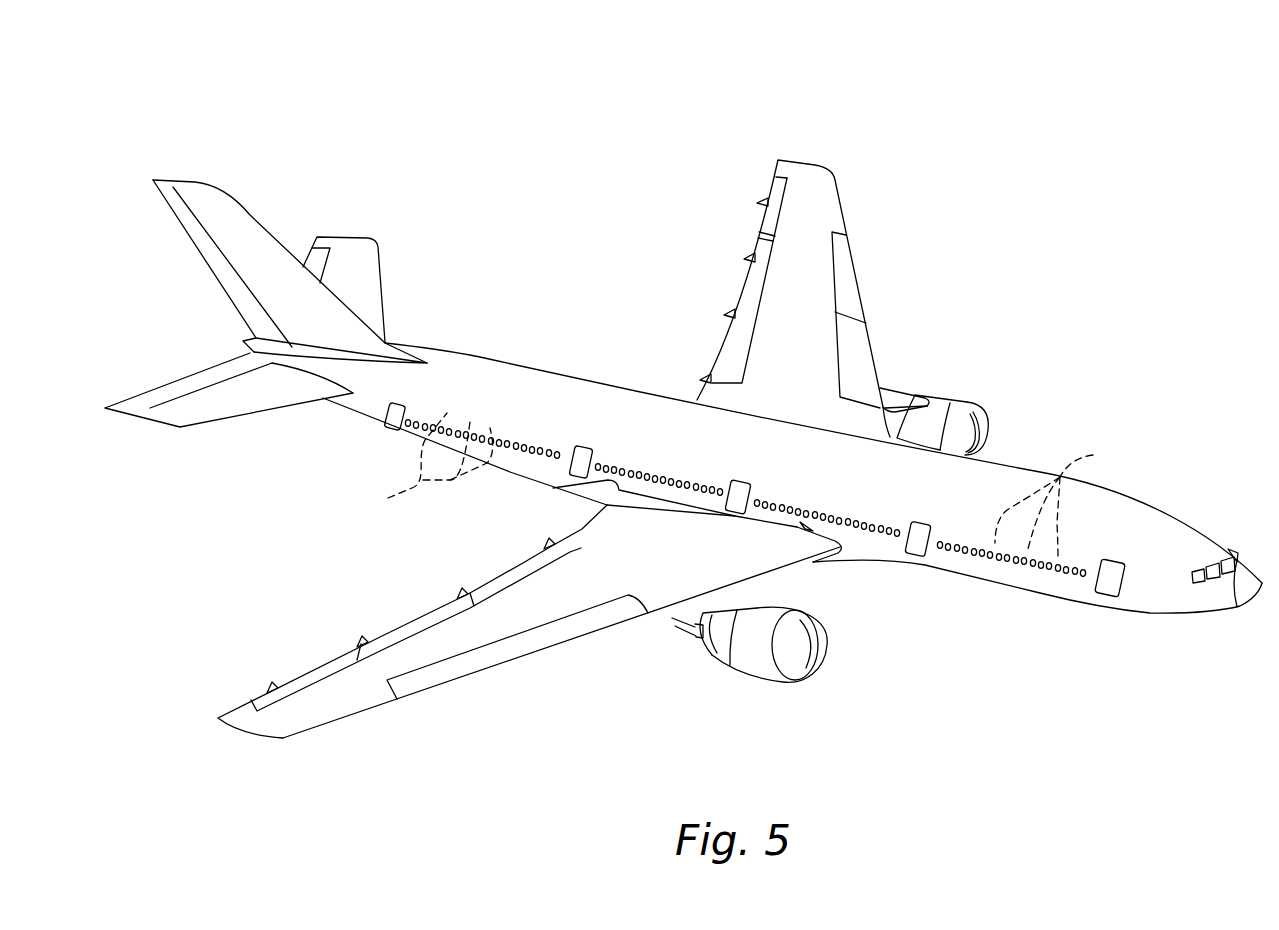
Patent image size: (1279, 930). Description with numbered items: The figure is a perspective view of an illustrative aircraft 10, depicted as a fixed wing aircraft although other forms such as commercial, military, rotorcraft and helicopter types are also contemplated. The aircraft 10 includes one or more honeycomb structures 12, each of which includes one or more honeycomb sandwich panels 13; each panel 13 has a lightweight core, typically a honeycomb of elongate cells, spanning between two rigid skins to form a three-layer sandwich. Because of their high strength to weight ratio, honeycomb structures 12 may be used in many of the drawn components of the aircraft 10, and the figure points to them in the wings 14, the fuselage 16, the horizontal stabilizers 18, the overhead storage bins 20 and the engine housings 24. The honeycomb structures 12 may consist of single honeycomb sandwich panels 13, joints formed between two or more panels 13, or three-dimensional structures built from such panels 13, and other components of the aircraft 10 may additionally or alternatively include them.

The aircraft 10 is at (1103, 218).
The honeycomb structure 12 is at (228, 216).
The honeycomb sandwich panel 13 is at (254, 226).
The wing 14 is at (850, 220).
The fuselage 16 is at (568, 377).
The horizontal stabilizer 18 is at (376, 258).
The overhead storage bin 20 is at (270, 228).
The engine housing 24 is at (948, 392).